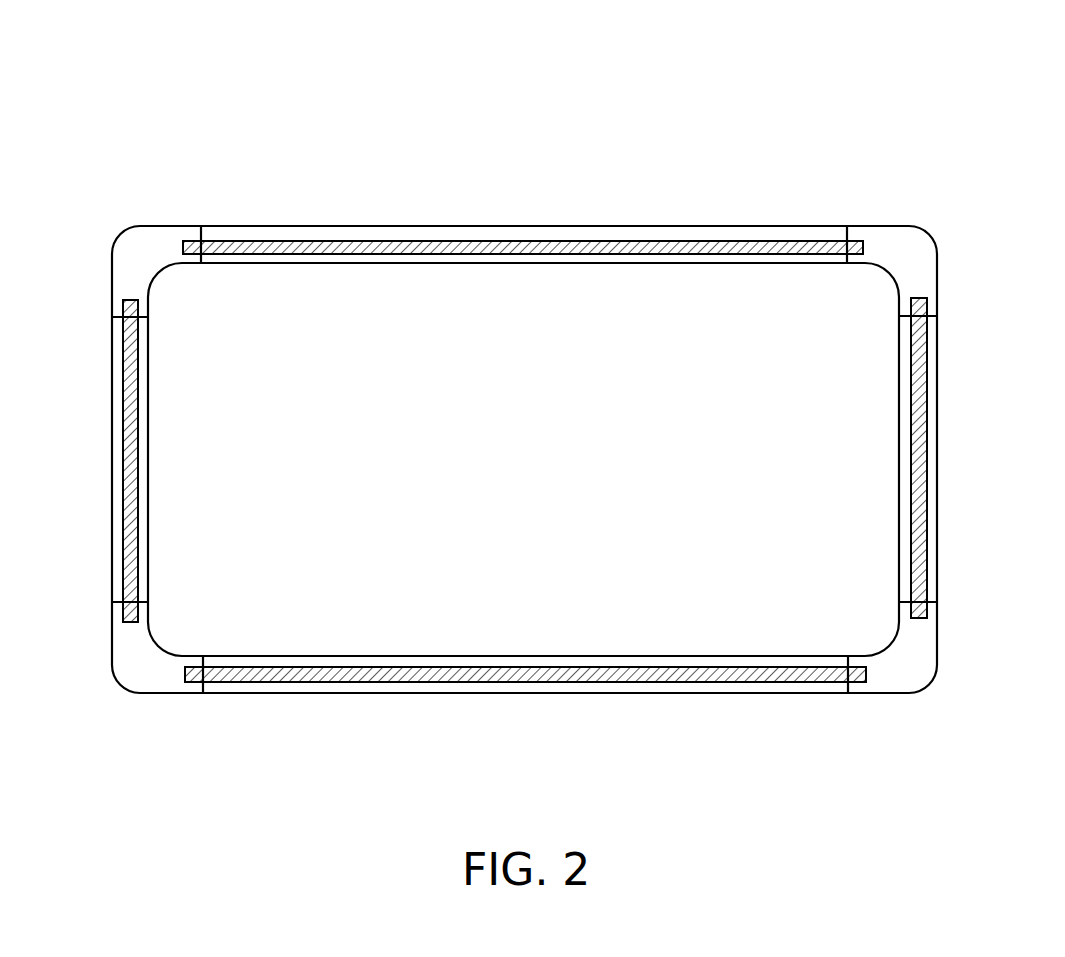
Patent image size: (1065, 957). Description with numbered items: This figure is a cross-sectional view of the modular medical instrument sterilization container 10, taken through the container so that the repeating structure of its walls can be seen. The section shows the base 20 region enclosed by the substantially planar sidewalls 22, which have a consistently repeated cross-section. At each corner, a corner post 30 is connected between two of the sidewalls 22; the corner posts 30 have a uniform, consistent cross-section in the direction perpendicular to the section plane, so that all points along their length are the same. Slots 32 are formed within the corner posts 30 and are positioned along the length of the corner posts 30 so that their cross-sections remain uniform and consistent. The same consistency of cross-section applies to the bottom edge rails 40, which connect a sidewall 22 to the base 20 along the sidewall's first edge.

The modular medical instrument sterilization container 10 is at (641, 137).
The base 20 is at (505, 456).
The sidewalls 22 is at (545, 248).
The corner posts 30 is at (128, 245).
The slots 32 is at (857, 235).
The bottom edge rails 40 is at (505, 227).